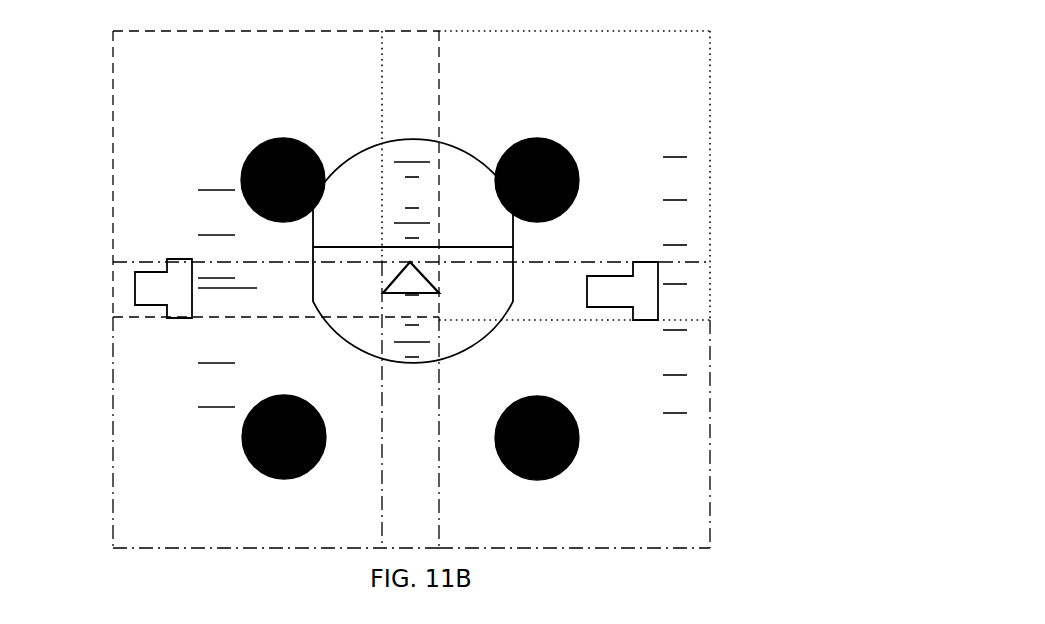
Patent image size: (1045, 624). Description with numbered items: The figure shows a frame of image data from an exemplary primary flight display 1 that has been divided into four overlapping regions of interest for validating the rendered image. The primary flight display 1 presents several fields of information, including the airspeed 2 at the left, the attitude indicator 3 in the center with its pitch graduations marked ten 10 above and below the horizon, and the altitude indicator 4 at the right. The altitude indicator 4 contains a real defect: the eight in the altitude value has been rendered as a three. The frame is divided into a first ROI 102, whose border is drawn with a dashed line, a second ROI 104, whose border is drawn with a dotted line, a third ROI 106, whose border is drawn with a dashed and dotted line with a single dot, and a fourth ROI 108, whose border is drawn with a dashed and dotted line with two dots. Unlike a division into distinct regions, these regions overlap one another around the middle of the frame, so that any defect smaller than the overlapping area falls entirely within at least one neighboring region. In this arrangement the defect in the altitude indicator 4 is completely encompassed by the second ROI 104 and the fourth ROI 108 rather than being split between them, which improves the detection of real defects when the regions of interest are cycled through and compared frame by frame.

The primary flight display 1 is at (78, 53).
The airspeed 2 is at (173, 246).
The attitude indicator 3 is at (452, 140).
The altitude indicator 4 is at (678, 264).
The pitch ladder graduation 10 is at (447, 310).
The first ROI 102 is at (123, 99).
The second ROI 104 is at (692, 198).
The third ROI 106 is at (122, 398).
The fourth ROI 108 is at (687, 457).